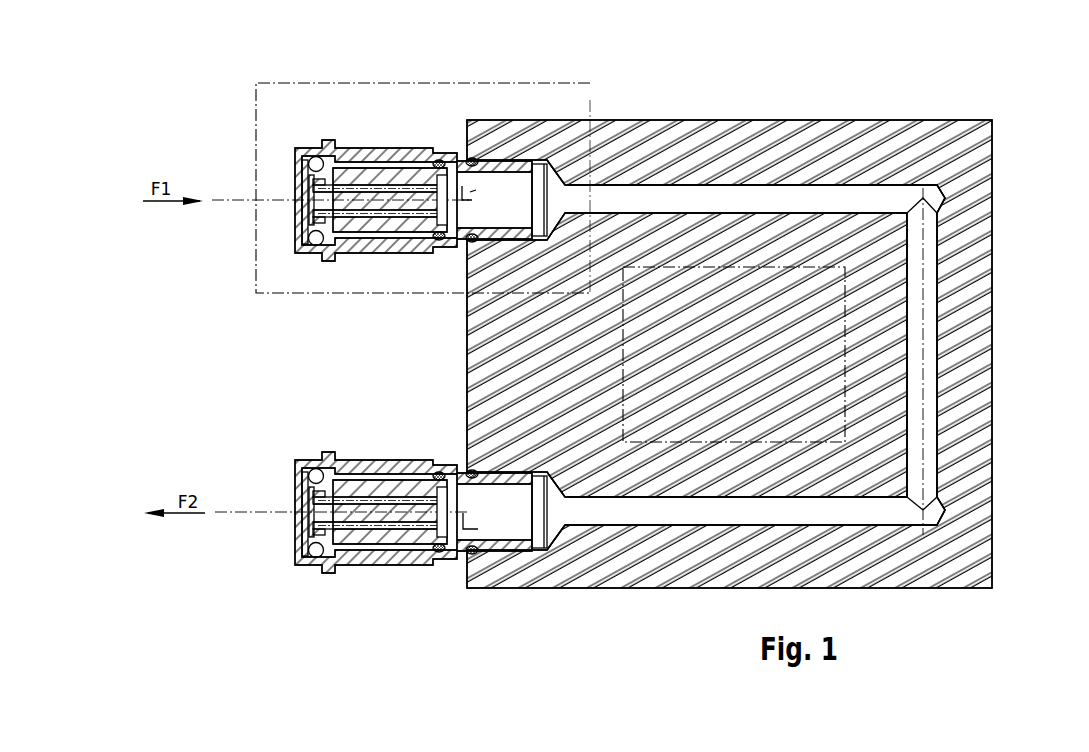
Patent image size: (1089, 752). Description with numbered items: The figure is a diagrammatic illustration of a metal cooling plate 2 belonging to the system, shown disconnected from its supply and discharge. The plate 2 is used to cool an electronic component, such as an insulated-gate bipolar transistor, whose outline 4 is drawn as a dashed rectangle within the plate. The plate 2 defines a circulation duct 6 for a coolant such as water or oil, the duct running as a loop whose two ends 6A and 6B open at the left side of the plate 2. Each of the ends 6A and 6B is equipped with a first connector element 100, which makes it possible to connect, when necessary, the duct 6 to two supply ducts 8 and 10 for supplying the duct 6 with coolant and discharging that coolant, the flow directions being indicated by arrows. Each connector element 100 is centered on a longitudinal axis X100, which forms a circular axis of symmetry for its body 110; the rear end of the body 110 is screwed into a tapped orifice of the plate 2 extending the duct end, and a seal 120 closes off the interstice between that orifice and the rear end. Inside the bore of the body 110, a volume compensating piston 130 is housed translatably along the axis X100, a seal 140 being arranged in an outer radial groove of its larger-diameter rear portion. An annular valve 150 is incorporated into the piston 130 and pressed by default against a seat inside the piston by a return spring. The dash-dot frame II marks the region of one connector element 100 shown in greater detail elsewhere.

The metal cooling plate 2 is at (992, 160).
The outline of electronic component 4 is at (848, 330).
The circulation duct 6 is at (841, 180).
The end of duct 6A is at (562, 198).
The end of duct 6B is at (562, 538).
The supply duct 8 is at (230, 200).
The supply duct 10 is at (240, 513).
The first connector element 100 is at (378, 352).
The body 110 is at (378, 145).
The seal 120 is at (472, 158).
The volume compensating piston 130 is at (398, 240).
The seal 140 is at (443, 158).
The annular valve 150 is at (297, 228).
The longitudinal axis X100 is at (493, 357).
The detail section II is at (285, 83).